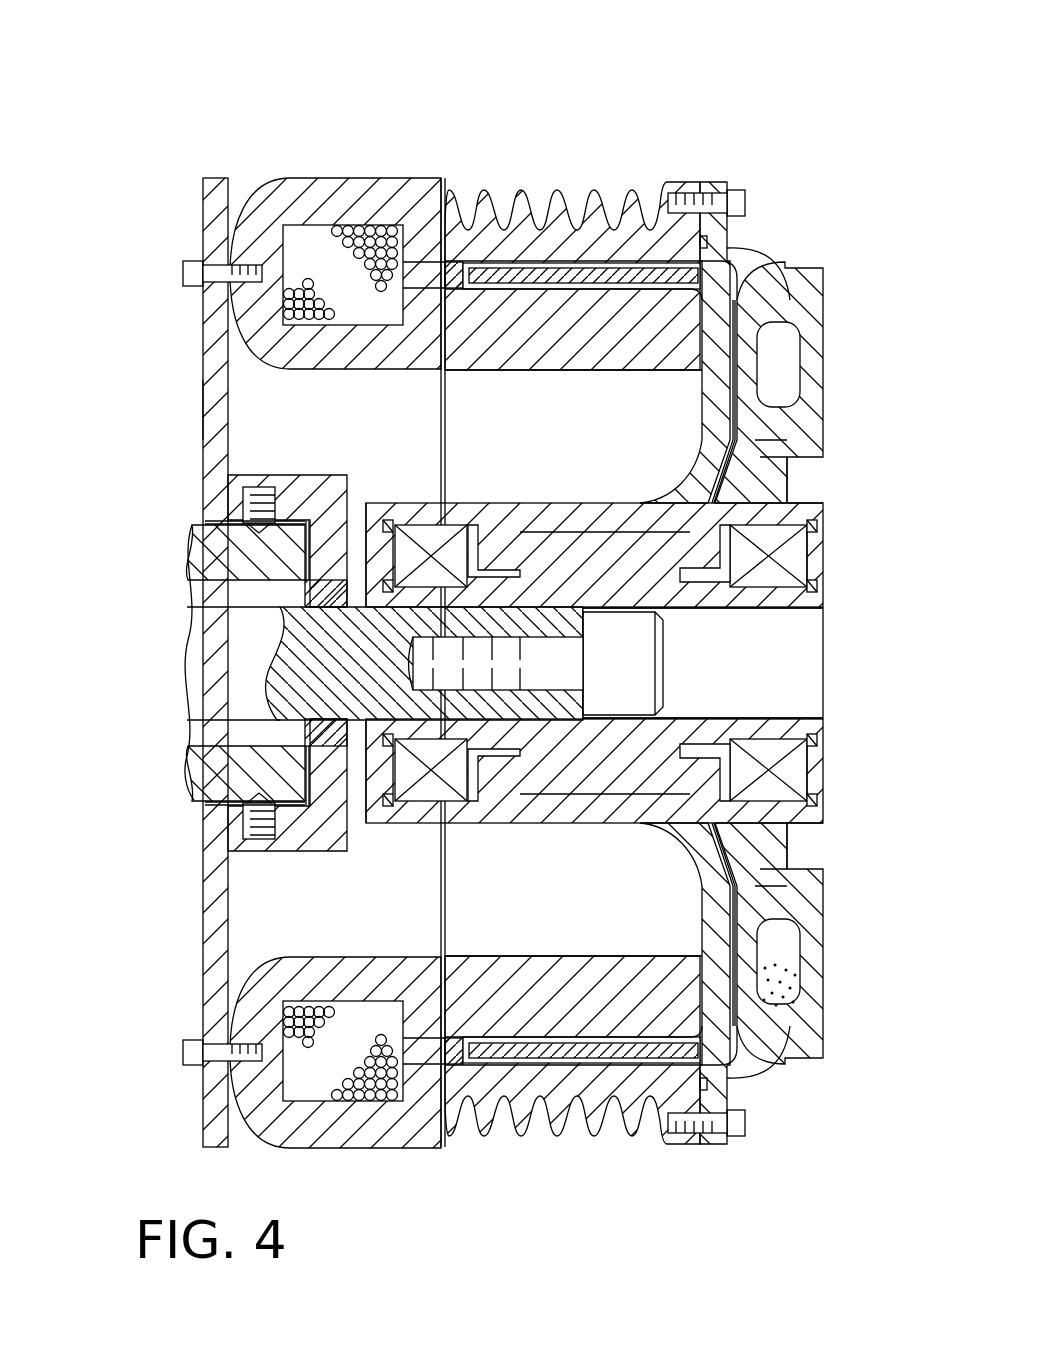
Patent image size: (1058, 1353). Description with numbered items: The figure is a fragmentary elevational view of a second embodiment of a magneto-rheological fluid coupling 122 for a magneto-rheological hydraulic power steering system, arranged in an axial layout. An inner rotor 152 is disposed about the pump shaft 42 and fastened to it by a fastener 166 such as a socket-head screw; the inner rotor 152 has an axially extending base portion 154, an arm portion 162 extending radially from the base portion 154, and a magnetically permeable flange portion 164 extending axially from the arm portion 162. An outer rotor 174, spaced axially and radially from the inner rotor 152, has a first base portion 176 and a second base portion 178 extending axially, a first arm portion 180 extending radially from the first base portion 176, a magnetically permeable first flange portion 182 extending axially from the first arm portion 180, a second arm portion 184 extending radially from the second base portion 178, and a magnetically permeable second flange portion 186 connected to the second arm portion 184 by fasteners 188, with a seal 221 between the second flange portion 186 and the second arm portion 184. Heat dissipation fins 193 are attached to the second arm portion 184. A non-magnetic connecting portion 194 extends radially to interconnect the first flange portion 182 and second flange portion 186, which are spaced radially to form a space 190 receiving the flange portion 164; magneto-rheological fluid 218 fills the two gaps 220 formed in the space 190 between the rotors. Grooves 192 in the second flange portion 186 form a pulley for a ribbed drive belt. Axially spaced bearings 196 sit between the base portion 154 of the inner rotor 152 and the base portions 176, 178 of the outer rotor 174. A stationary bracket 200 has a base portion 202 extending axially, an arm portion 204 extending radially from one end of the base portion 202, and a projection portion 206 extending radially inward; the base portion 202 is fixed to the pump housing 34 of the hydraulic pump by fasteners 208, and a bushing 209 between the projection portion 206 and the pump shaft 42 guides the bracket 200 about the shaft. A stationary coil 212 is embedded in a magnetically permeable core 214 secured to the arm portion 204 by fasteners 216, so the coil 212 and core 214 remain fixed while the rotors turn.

The magneto-rheological fluid coupling 122 is at (345, 140).
The second flange portion 186 is at (483, 215).
The connecting portion 194 is at (453, 262).
The grooves 192 is at (517, 190).
The flange portion 164 is at (600, 265).
The space 190 is at (640, 268).
The fasteners 188 is at (745, 200).
The seal 221 is at (707, 242).
The outer rotor 174 is at (780, 262).
The heat dissipation fins 193 is at (850, 1085).
The first arm portion 180 is at (722, 310).
The arm portion 162 is at (756, 338).
The second arm portion 184 is at (818, 362).
The first flange portion 182 is at (762, 420).
The inner rotor 152 is at (760, 477).
The second base portion 178 is at (790, 515).
The base portion 154 is at (700, 600).
The fastener 166 is at (665, 670).
The bearings 196 is at (805, 790).
The magneto-rheological fluid 218 is at (785, 975).
The gaps 220 is at (565, 1100).
The arm portion 204 is at (215, 200).
The bracket 200 is at (208, 405).
The fasteners 216 is at (183, 272).
The magnetically permeable core 214 is at (410, 1125).
The stationary coil 212 is at (350, 1105).
The first base portion 176 is at (500, 522).
The fasteners 208 is at (243, 500).
The base portion 202 is at (300, 523).
The projection portion 206 is at (328, 560).
The pump shaft 42 is at (315, 663).
The bushing 209 is at (300, 735).
The pump housing 34 is at (207, 773).